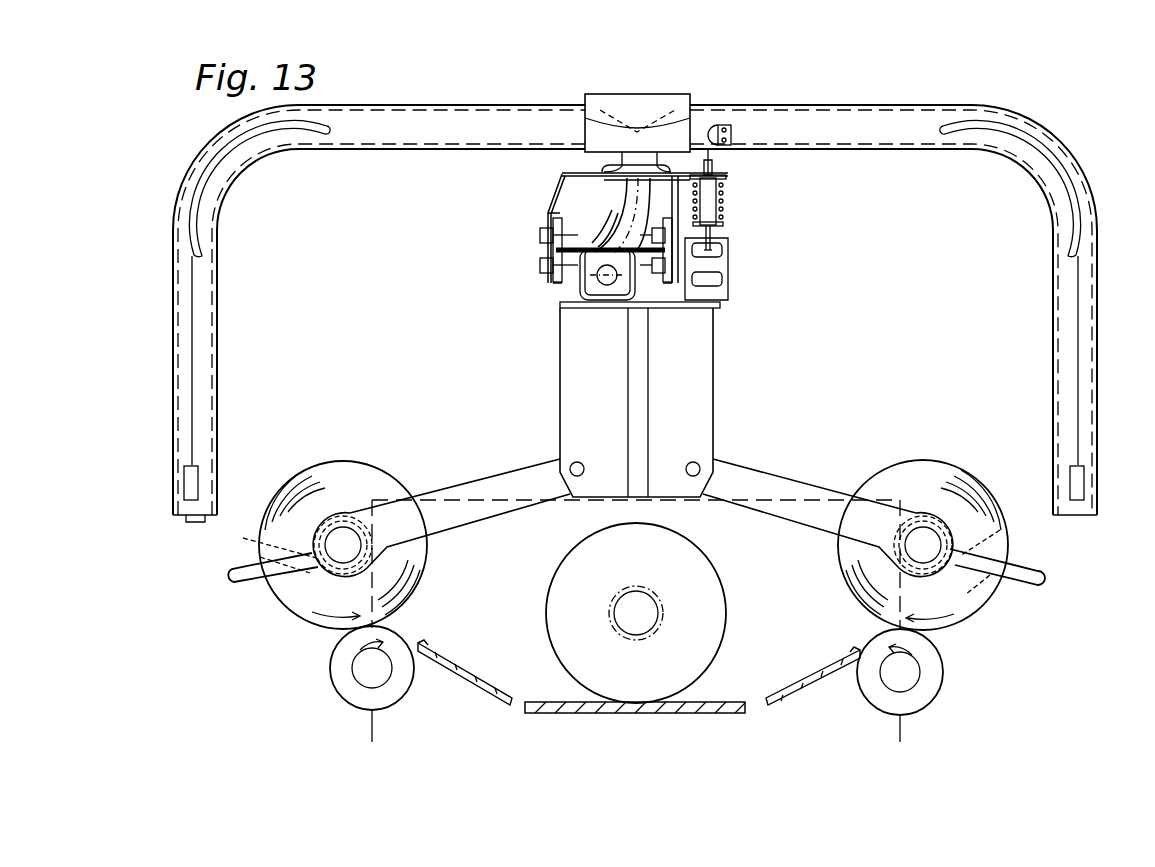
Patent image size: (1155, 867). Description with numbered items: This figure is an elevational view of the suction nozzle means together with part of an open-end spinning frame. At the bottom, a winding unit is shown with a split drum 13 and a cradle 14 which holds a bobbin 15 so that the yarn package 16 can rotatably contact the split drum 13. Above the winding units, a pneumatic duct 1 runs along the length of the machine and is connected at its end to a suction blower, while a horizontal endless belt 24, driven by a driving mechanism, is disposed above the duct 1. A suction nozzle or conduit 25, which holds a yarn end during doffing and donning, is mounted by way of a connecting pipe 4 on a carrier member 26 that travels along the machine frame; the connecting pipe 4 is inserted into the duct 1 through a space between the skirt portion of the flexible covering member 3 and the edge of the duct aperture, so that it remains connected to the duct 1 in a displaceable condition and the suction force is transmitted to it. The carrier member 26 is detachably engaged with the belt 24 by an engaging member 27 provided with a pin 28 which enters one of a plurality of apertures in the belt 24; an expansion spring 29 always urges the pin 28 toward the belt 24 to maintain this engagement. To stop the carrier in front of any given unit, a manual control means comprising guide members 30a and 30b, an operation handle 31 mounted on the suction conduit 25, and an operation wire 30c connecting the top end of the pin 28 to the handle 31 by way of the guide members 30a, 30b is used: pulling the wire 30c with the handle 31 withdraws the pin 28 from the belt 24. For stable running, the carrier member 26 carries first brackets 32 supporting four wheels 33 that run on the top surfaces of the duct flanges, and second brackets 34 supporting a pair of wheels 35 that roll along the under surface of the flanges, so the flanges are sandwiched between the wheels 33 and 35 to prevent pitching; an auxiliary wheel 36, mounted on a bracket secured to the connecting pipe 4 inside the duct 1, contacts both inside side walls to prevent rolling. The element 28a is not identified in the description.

The pneumatic duct 1 is at (560, 305).
The flexible covering member 3 is at (604, 248).
The connecting pipe 4 is at (632, 193).
The split drum 13 is at (335, 669).
The cradle 14 is at (497, 482).
The bobbin 15 is at (262, 542).
The yarn package 16 is at (337, 466).
The horizontal endless belt 24 is at (730, 245).
The suction nozzle or conduit 25 is at (963, 105).
The carrier member 26 is at (575, 175).
The engaging member 27 is at (716, 242).
The pin 28 is at (708, 205).
The pin 28a is at (713, 170).
The expansion spring 29 is at (724, 195).
The guide member 30a is at (708, 147).
The guide member 30b is at (220, 175).
The operation wire 30c is at (192, 388).
The operation handle 31 is at (196, 484).
The first brackets 32 is at (548, 222).
The wheels 33 is at (545, 235).
The second brackets 34 is at (545, 265).
The wheels 35 is at (560, 280).
The auxiliary wheel 36 is at (620, 287).